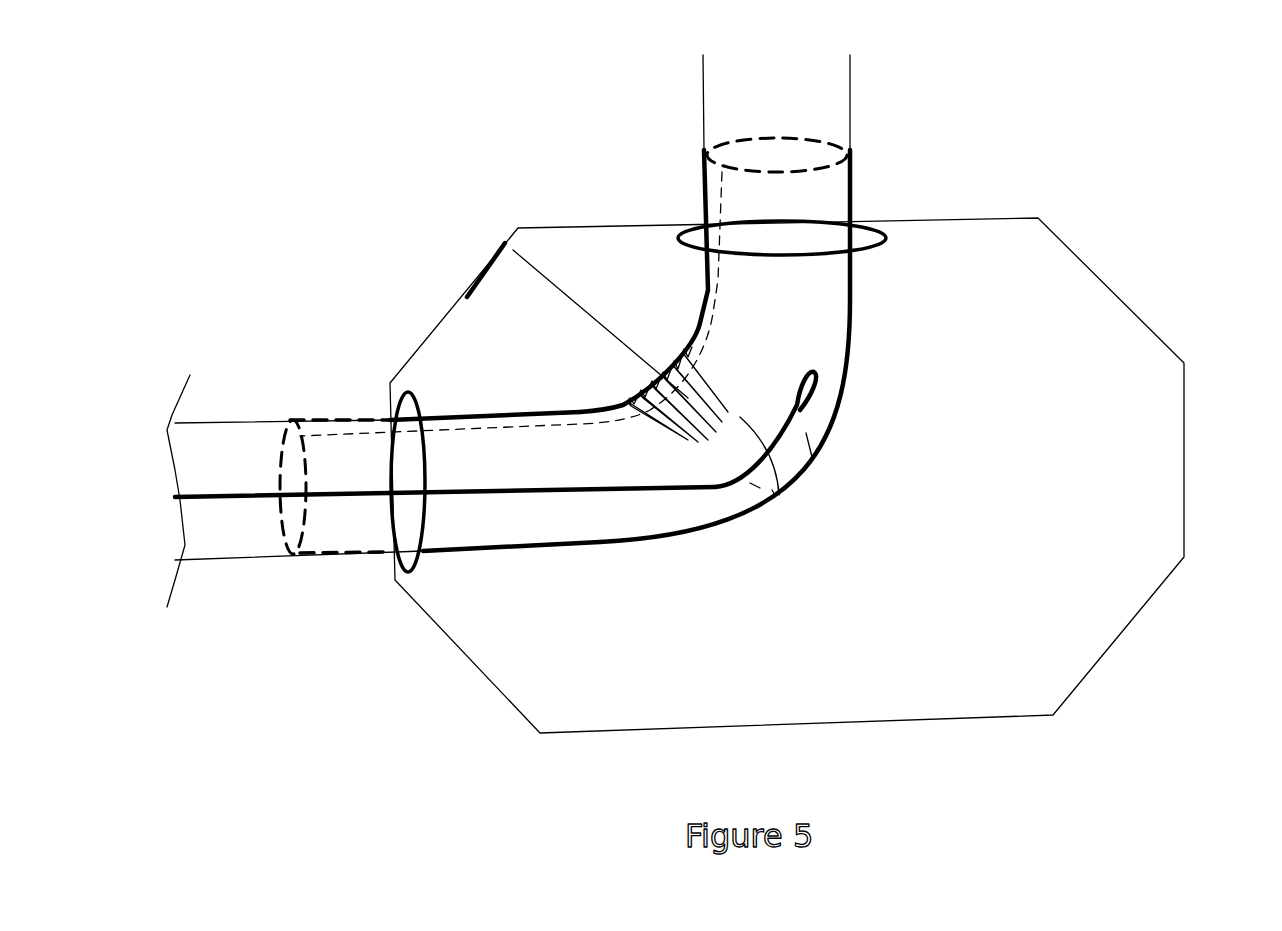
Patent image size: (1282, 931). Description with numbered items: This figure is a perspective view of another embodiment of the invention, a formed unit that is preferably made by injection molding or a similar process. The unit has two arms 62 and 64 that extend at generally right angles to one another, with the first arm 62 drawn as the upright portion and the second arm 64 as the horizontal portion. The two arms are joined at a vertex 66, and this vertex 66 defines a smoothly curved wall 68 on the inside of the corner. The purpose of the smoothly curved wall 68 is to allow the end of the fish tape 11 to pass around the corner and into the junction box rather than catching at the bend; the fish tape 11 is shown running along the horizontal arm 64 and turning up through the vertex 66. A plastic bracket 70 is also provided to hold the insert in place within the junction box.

The fish tape 11 is at (577, 490).
The arm 62 is at (850, 308).
The arm 64 is at (457, 525).
The vertex 66 is at (818, 452).
The smoothly curved wall 68 is at (800, 437).
The plastic bracket 70 is at (518, 228).